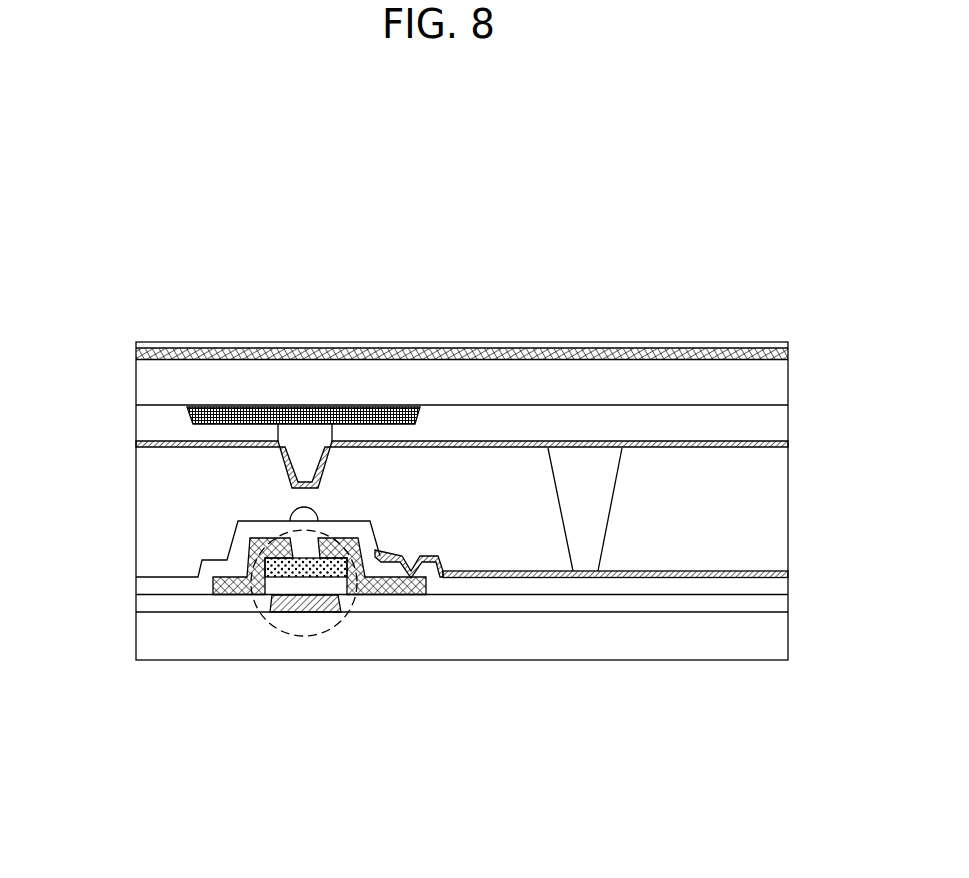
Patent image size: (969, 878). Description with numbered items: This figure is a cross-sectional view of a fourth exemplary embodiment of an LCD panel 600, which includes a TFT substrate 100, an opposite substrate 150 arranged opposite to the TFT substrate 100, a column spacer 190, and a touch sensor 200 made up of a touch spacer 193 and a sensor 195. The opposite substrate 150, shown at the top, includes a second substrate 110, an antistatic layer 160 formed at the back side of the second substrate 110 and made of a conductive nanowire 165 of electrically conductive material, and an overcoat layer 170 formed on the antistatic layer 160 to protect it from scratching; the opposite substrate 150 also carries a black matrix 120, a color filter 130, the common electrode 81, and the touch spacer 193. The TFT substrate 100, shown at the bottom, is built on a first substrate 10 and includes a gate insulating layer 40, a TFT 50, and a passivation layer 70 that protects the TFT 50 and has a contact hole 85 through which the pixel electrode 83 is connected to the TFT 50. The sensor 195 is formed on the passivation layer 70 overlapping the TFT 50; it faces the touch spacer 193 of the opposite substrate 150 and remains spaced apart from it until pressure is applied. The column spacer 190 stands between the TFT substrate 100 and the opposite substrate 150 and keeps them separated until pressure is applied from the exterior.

The LCD panel 600 is at (93, 230).
The opposite substrate 150 is at (811, 396).
The overcoat layer 170 is at (623, 346).
The antistatic layer 160 is at (563, 355).
The conductive nanowire 165 is at (720, 358).
The second substrate 110 is at (490, 380).
The black matrix 120 is at (307, 411).
The color filter 130 is at (422, 432).
The common electrode 81 is at (788, 443).
The touch sensor 200 is at (63, 465).
The touch spacer 193 is at (303, 473).
The sensor 195 is at (303, 512).
The TFT substrate 100 is at (811, 640).
The first substrate 10 is at (502, 643).
The passivation layer 70 is at (726, 592).
The TFT 50 is at (303, 641).
The gate insulating layer 40 is at (423, 600).
The contact hole 85 is at (406, 551).
The pixel electrode 83 is at (653, 578).
The column spacer 190 is at (585, 558).